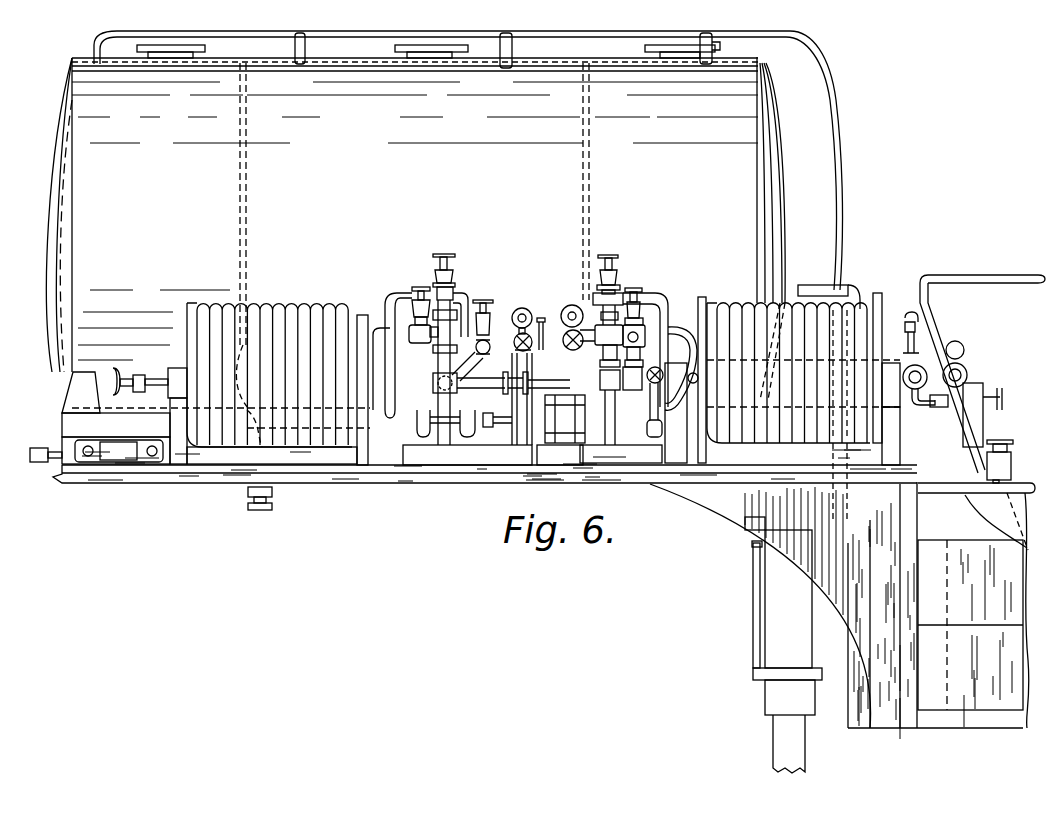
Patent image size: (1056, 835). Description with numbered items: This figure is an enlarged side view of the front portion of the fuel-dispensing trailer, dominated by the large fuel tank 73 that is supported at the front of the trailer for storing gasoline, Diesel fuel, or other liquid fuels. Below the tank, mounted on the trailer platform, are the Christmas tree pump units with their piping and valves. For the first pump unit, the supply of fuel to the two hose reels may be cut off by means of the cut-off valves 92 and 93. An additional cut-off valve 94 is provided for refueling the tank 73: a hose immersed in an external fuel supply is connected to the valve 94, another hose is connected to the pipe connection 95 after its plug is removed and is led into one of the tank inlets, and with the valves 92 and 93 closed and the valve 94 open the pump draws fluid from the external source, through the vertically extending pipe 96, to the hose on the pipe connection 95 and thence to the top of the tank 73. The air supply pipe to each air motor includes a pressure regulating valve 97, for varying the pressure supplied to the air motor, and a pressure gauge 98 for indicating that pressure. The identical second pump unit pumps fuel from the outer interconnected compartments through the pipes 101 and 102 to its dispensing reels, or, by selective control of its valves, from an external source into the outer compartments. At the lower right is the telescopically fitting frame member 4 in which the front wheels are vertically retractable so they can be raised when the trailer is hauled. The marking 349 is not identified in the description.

The fuel tank 73 is at (77, 167).
The cut-off valve 92 is at (413, 312).
The cut-off valve 93 is at (451, 278).
The cut-off valve 94 is at (462, 378).
The pipe connection 95 is at (428, 283).
The vertically extending pipe 96 is at (439, 352).
The pressure regulating valve 97 is at (514, 327).
The pressure gauge 98 is at (516, 309).
The pipe 101 is at (695, 300).
The pipe 102 is at (661, 292).
The fitting 349 is at (436, 397).
The telescopically fitting frame member 4 is at (775, 637).